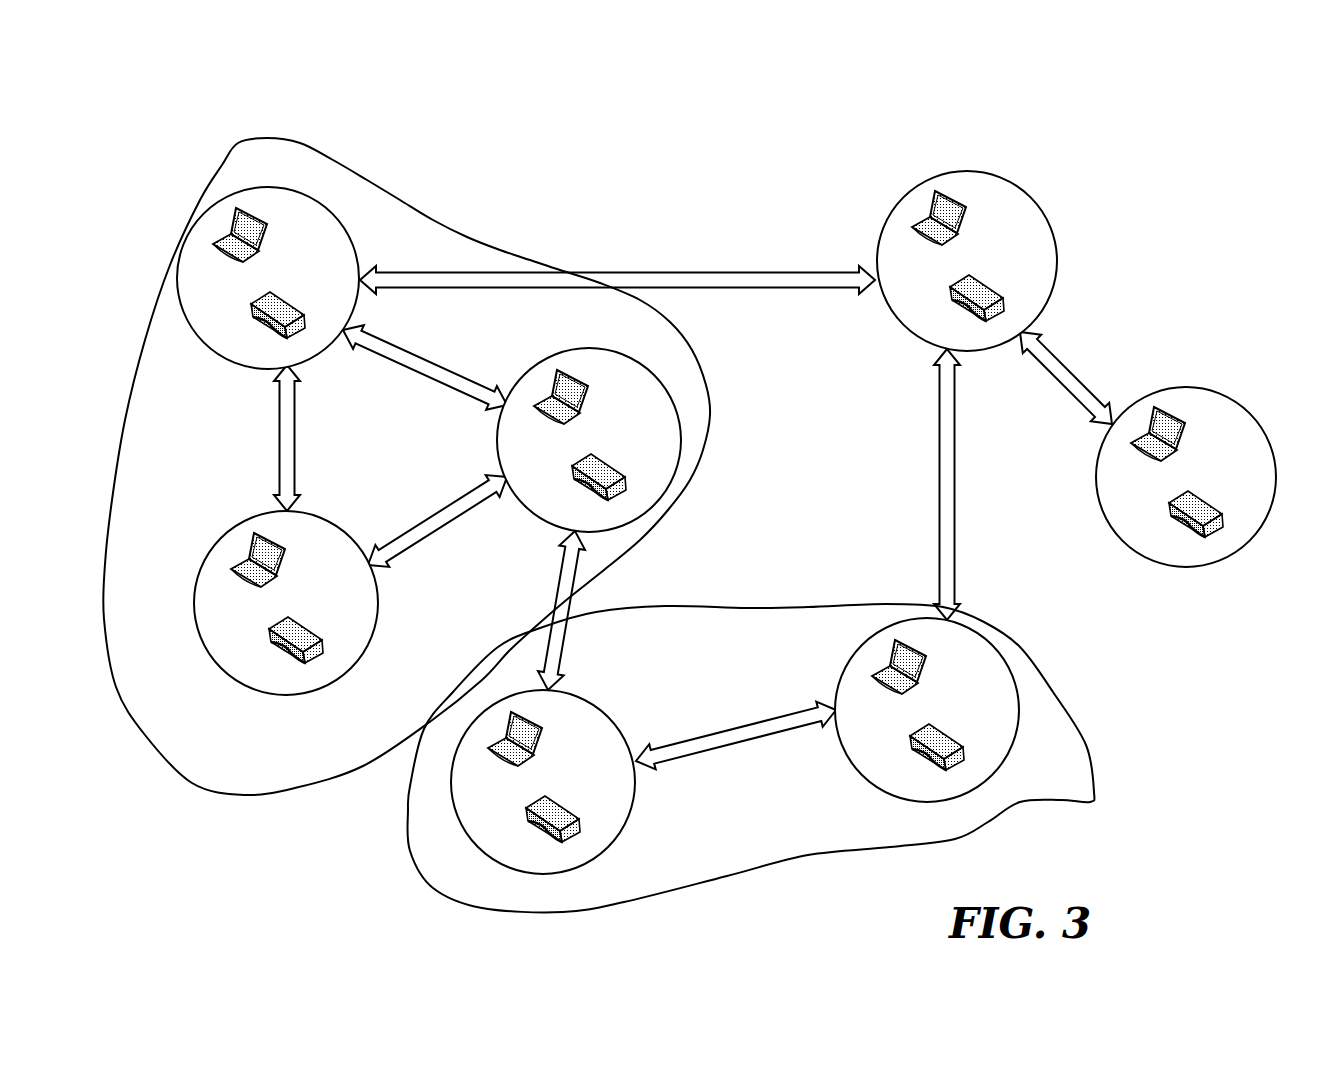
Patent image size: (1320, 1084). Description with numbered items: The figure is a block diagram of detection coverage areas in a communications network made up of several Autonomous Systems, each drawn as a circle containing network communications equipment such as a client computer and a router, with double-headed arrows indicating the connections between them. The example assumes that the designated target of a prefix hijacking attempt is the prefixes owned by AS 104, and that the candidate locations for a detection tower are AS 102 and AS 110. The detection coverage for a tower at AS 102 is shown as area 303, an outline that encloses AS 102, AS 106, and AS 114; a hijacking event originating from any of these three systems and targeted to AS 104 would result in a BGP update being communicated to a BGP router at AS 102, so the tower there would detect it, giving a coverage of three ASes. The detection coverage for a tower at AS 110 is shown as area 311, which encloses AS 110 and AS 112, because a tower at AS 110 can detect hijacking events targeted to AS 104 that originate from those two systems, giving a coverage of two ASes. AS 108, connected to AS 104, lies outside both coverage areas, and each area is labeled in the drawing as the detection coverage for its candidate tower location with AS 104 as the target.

The Autonomous System AS 102 is at (305, 247).
The Autonomous System AS 104 is at (977, 220).
The Autonomous System AS 106 is at (640, 428).
The Autonomous System AS 108 is at (1196, 435).
The Autonomous System AS 110 is at (964, 679).
The Autonomous System AS 112 is at (581, 751).
The Autonomous System AS 114 is at (288, 628).
The detection coverage area for AS 102 303 is at (406, 430).
The detection coverage area for AS 110 311 is at (750, 717).